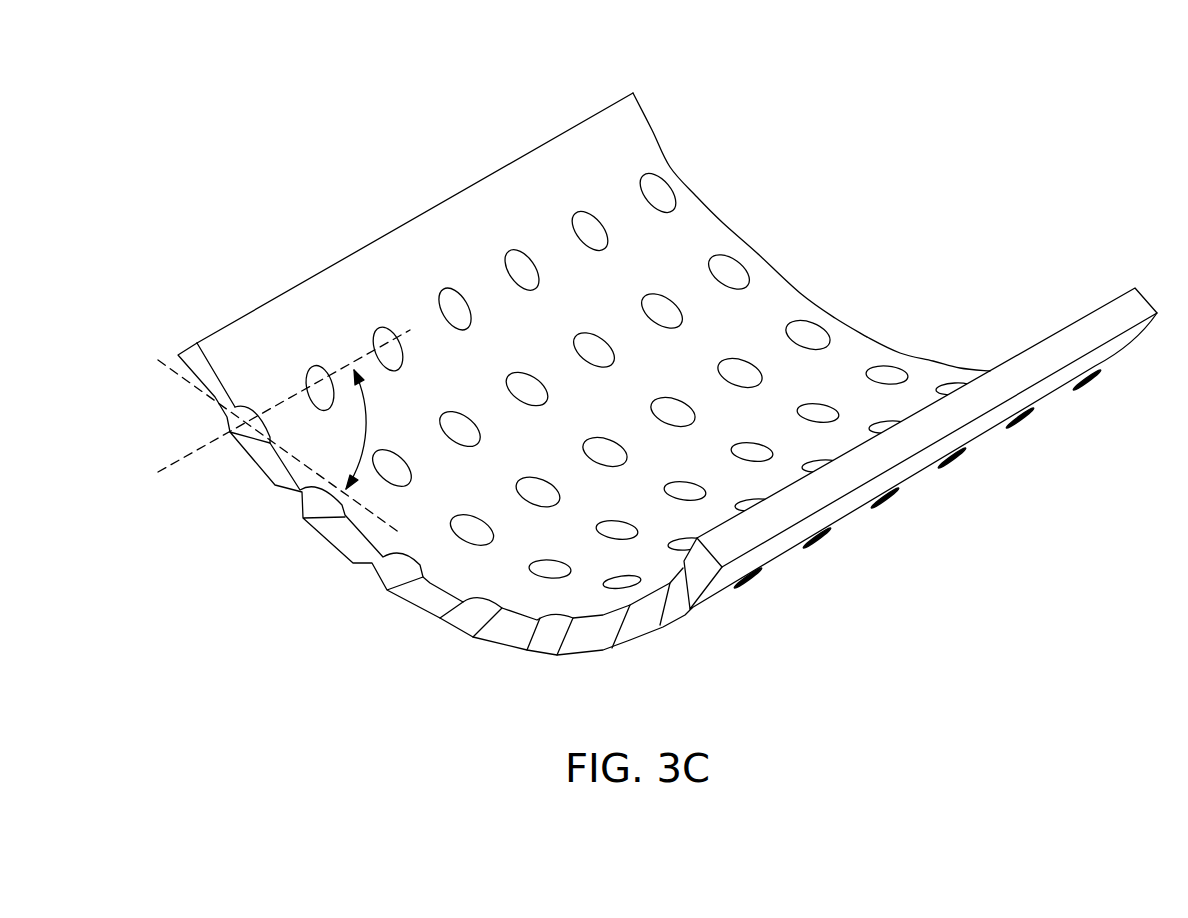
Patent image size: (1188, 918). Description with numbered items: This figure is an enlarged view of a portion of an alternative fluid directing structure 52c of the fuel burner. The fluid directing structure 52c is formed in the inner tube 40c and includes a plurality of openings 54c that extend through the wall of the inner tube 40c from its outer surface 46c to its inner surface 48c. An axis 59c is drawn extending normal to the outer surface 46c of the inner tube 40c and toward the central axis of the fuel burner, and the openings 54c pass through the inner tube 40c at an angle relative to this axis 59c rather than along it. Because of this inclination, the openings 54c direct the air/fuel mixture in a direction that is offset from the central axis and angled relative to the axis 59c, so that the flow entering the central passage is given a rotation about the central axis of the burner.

The inner tube 40c is at (491, 146).
The outer surface 46c is at (1107, 353).
The inner surface 48c is at (857, 343).
The fluid directing structure 52c is at (826, 272).
The openings 54c is at (665, 181).
The axis 59c is at (192, 455).